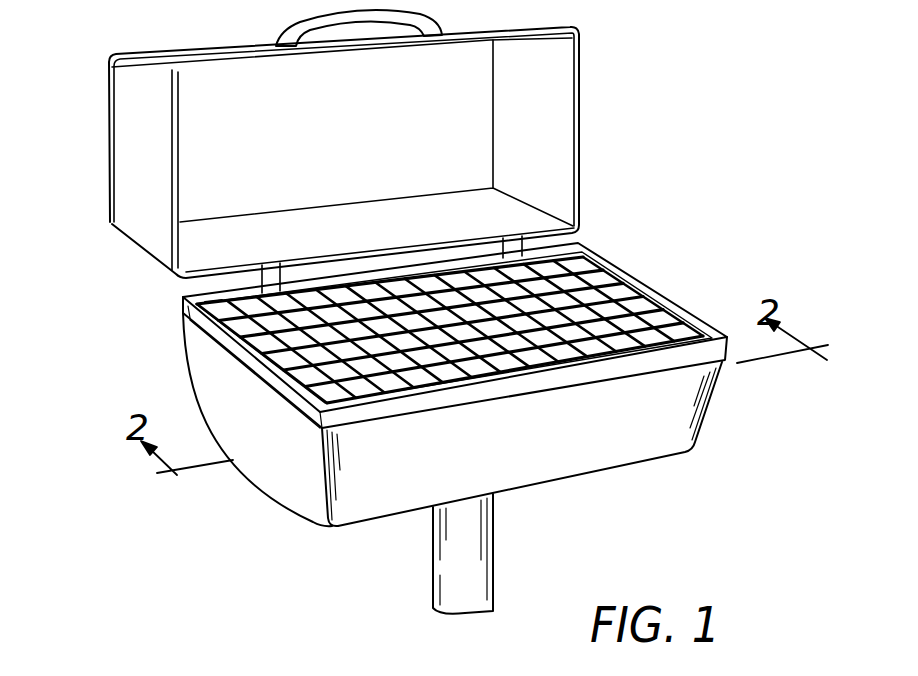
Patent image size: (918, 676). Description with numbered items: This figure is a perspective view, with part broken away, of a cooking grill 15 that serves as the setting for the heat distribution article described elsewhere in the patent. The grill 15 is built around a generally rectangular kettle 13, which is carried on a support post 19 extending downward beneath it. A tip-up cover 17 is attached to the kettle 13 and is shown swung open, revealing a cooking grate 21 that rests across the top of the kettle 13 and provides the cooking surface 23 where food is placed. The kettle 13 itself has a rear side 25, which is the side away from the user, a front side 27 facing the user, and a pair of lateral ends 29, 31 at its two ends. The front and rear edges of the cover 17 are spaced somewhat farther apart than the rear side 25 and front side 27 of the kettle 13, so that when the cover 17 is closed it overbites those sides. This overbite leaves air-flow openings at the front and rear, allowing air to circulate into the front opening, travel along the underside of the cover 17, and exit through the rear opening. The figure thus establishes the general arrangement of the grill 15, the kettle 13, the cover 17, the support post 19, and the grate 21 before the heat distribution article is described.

The kettle 13 is at (680, 427).
The cooking grill 15 is at (149, 301).
The tip-up cover 17 is at (582, 92).
The support post 19 is at (493, 530).
The cooking grate 21 is at (607, 293).
The cooking surface 23 is at (610, 200).
The rear side 25 is at (213, 293).
The front side 27 is at (390, 407).
The lateral end 29 is at (241, 360).
The lateral end 31 is at (677, 296).